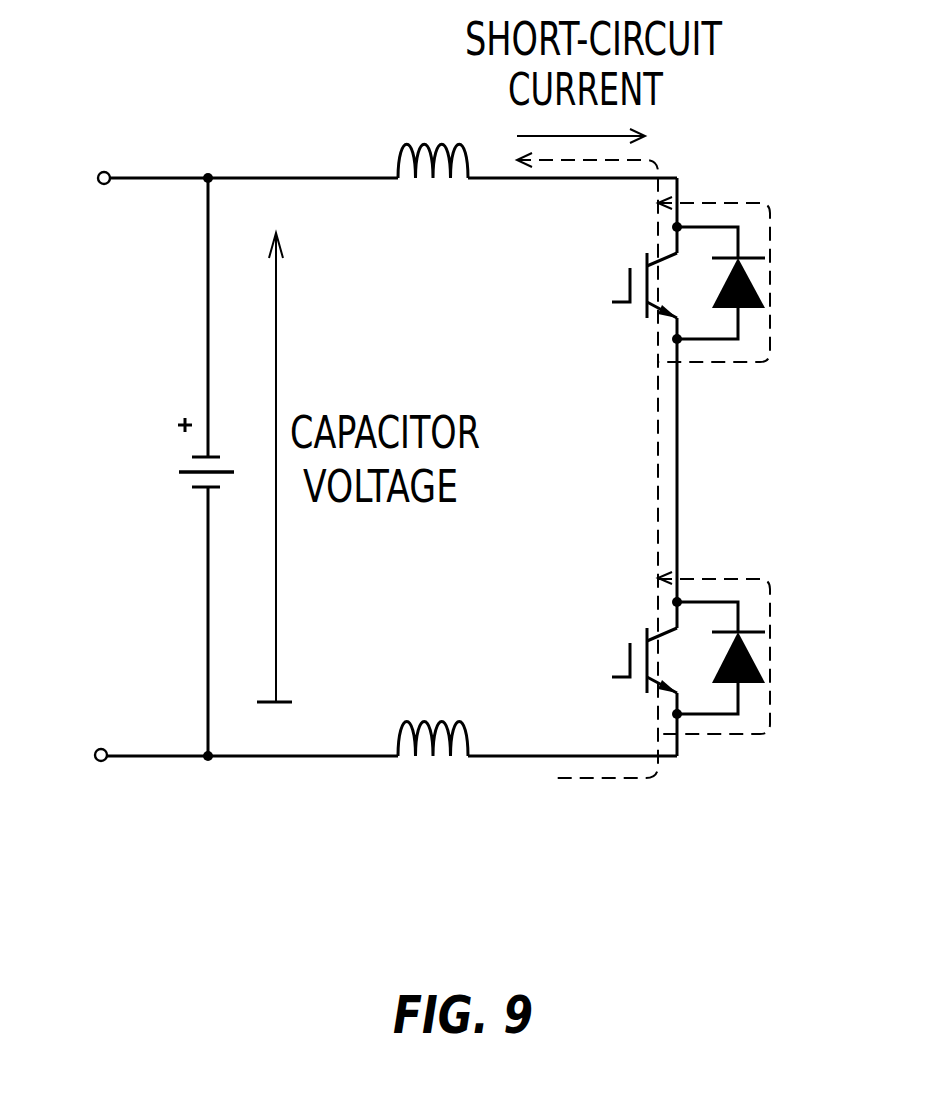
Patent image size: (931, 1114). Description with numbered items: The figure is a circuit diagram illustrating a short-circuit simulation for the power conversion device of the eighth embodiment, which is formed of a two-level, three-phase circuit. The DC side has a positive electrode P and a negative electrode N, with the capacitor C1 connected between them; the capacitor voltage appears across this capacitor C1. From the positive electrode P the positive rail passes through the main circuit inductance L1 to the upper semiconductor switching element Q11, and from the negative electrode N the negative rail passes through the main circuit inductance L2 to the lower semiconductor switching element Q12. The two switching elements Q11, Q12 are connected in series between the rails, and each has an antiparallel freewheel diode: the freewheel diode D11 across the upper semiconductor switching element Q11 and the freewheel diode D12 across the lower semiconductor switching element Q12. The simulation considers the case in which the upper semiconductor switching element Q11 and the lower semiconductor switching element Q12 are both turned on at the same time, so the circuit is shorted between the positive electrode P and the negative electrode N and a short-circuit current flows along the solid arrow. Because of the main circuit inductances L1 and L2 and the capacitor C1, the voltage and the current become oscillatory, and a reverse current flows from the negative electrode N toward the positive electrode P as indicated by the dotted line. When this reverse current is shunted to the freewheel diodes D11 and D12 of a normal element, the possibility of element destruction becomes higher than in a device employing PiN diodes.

The positive electrode P is at (89, 179).
The negative electrode N is at (86, 757).
The main circuit inductance L1 is at (433, 139).
The main circuit inductance L2 is at (433, 716).
The capacitor C1 is at (181, 455).
The upper semiconductor switching element Q11 is at (592, 271).
The lower semiconductor switching element Q12 is at (592, 648).
The freewheel diode D11 is at (745, 282).
The freewheel diode D12 is at (746, 656).